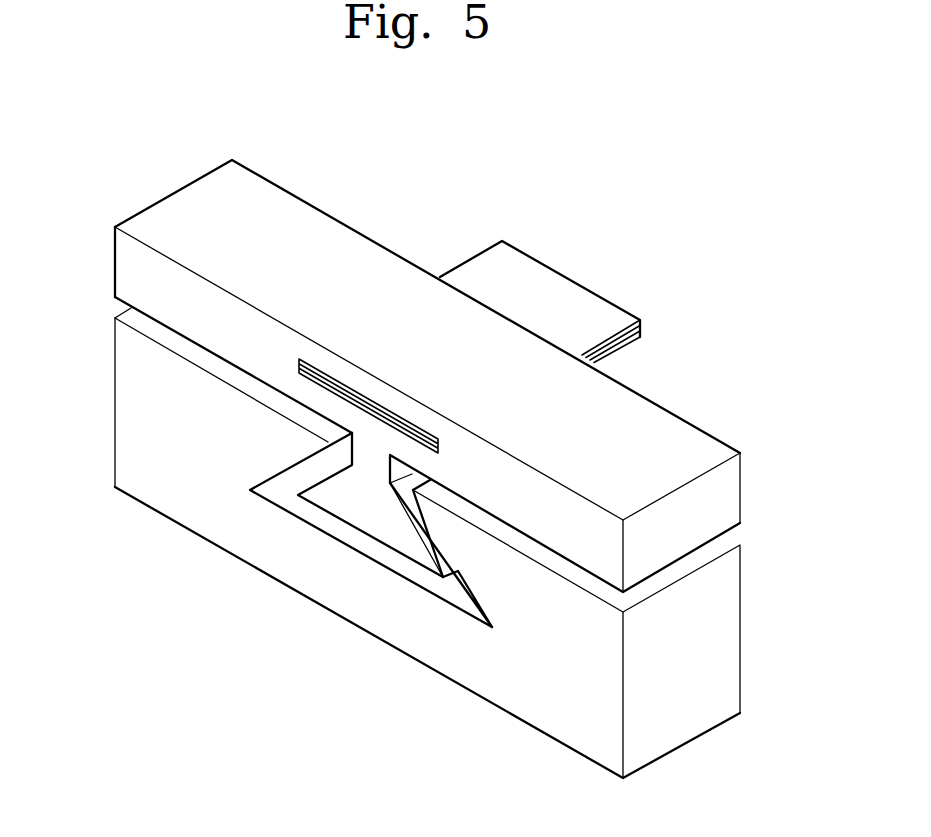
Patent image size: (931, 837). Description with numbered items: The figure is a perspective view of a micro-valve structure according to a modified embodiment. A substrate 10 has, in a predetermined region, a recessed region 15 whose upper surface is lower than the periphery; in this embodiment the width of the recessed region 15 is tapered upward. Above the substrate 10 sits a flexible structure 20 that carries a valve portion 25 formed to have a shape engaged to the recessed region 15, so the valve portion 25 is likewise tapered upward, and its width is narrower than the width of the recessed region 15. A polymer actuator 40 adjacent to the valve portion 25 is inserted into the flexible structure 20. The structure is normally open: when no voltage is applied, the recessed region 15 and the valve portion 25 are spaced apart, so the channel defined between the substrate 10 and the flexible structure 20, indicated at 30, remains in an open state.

The substrate 10 is at (725, 637).
The recessed region 15 is at (460, 605).
The flexible structure 20 is at (725, 496).
The valve portion 25 is at (368, 513).
The coupling interface 30 is at (122, 310).
The polymer actuator 40 is at (563, 301).